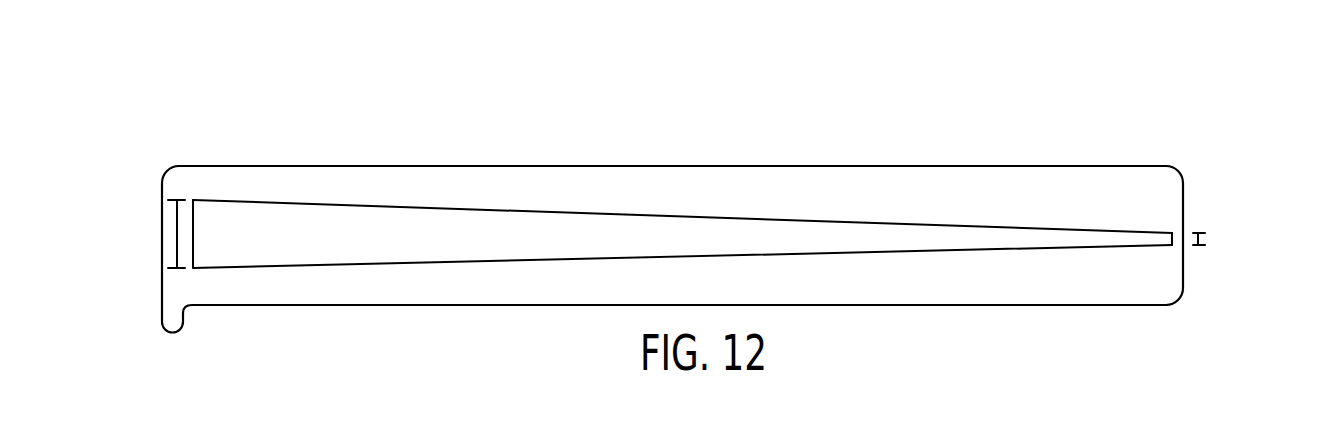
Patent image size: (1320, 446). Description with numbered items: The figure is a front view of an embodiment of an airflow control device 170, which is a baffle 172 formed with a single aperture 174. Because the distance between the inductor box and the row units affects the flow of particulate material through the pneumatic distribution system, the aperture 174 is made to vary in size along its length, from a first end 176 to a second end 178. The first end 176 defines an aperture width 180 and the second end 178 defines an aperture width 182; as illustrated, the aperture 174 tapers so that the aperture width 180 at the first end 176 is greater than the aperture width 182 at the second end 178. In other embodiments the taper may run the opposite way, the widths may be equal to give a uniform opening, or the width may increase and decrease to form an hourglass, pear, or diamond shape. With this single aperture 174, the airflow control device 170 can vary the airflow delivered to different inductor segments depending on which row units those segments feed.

The airflow control device 170 is at (672, 191).
The baffle 172 is at (730, 166).
The aperture 174 is at (682, 215).
The first end 176 is at (682, 193).
The second end 178 is at (1168, 238).
The aperture width 180 is at (175, 235).
The aperture width 182 is at (1205, 238).